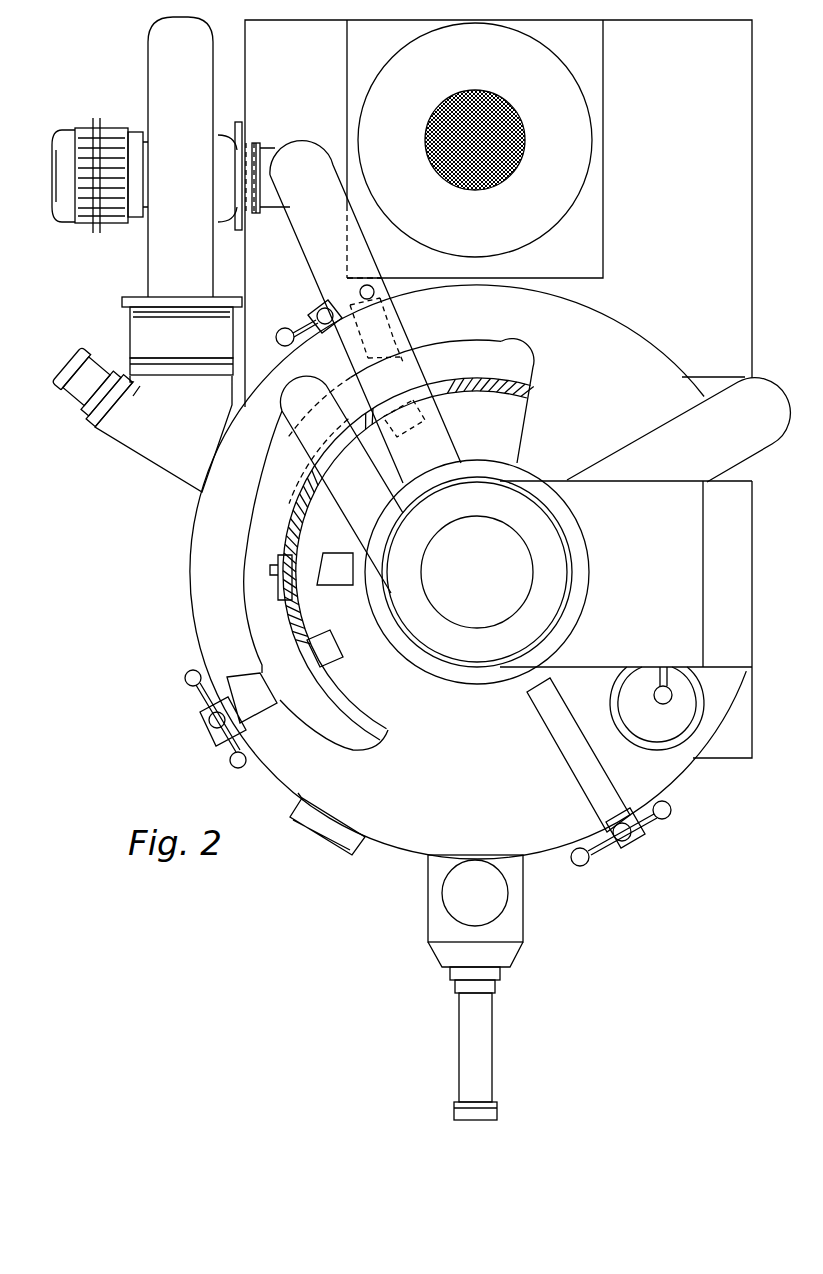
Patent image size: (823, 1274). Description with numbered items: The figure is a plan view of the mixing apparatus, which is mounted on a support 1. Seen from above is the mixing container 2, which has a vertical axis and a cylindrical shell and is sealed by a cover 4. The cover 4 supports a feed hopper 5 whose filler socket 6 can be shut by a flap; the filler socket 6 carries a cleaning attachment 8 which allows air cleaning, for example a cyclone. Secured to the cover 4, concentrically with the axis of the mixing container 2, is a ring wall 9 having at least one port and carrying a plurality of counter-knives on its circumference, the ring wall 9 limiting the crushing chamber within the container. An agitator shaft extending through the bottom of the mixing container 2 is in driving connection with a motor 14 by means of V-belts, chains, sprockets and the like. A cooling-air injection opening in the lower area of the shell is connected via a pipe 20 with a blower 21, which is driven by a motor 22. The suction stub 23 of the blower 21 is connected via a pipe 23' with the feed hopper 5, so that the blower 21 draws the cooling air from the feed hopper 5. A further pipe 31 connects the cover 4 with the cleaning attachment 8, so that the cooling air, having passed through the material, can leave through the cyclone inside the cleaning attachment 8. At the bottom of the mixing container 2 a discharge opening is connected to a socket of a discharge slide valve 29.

The support 1 is at (663, 298).
The mixing container 2 is at (397, 850).
The cover 4 is at (463, 773).
The feed hopper 5 is at (582, 620).
The filler socket 6 is at (740, 572).
The cleaning attachment 8 is at (555, 546).
The ring wall 9 is at (505, 385).
The motor 14 is at (587, 144).
The pipe 20 is at (160, 460).
The blower 21 is at (155, 253).
The motor 22 is at (107, 143).
The suction stub 23 is at (261, 160).
The pipe 23' is at (362, 312).
The discharge slide valve 29 is at (515, 930).
The pipe 31 is at (340, 491).